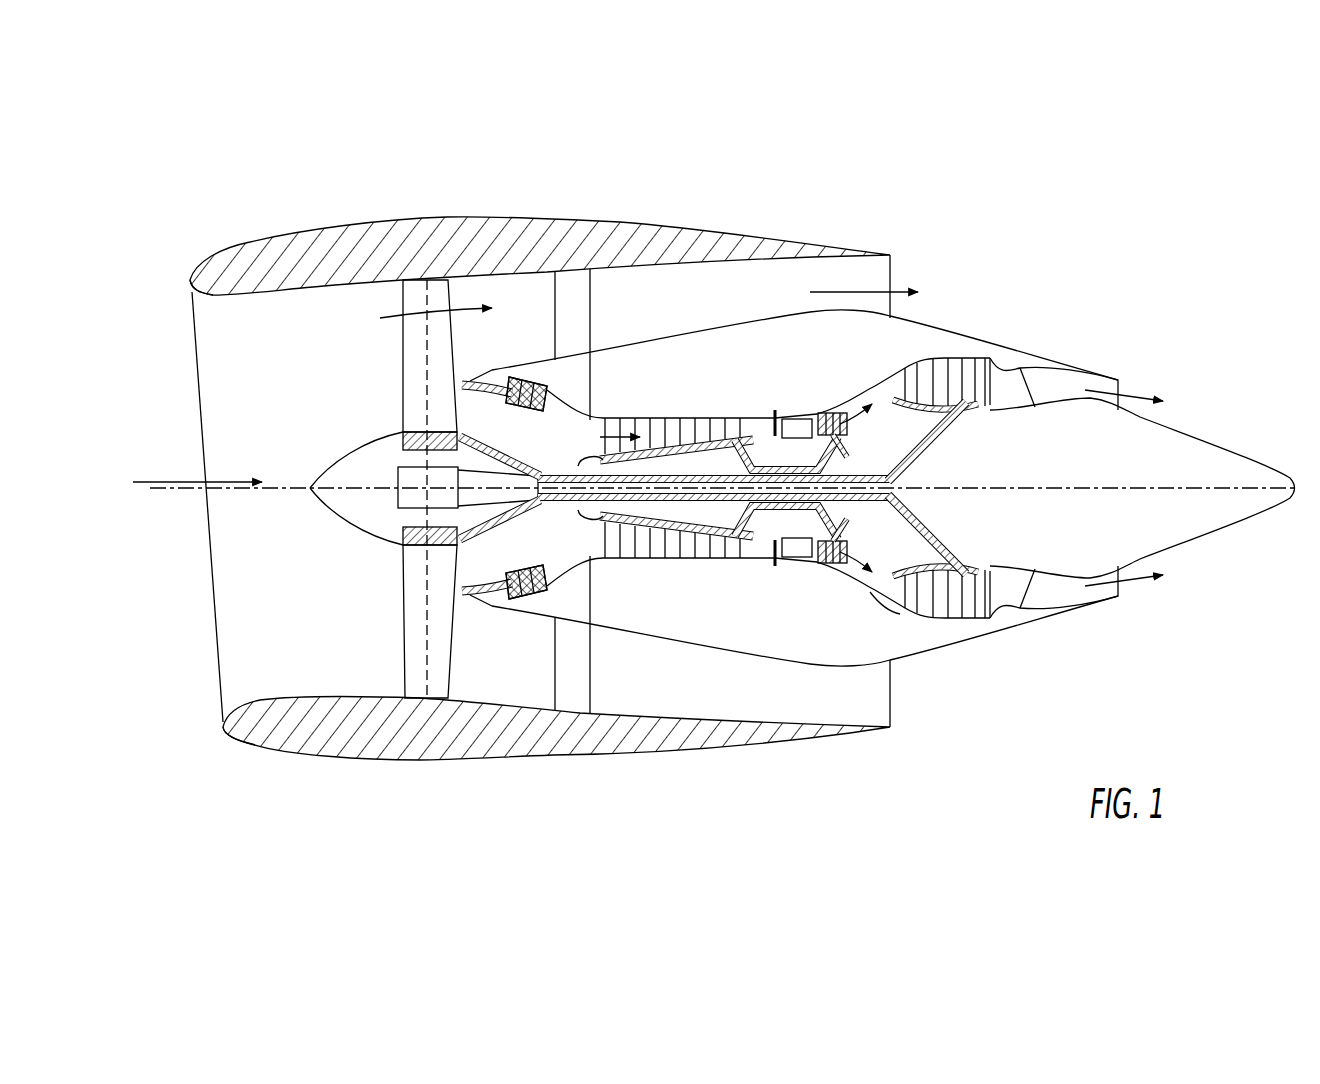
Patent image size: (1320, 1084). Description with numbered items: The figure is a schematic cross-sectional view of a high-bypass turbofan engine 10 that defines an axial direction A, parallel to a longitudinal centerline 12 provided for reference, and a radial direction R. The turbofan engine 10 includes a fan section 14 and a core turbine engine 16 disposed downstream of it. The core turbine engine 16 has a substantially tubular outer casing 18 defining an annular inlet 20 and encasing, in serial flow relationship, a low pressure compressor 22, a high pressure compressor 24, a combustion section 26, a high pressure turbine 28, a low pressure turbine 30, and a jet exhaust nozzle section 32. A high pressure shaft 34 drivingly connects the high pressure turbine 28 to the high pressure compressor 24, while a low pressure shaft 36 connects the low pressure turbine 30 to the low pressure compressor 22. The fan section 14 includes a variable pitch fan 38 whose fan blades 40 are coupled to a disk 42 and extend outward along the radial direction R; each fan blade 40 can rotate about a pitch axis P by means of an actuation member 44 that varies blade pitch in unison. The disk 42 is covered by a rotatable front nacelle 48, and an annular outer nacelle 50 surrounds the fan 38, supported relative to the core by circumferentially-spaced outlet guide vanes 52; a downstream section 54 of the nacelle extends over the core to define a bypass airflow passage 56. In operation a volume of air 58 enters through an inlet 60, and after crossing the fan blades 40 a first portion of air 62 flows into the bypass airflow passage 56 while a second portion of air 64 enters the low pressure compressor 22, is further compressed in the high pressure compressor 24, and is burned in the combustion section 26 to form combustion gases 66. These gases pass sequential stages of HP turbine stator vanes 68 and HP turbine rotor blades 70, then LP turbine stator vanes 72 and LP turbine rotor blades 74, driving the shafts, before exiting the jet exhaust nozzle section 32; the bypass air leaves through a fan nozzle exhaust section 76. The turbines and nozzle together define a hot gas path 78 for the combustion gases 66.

The turbofan engine 10 is at (714, 485).
The longitudinal centerline 12 is at (1058, 487).
The fan section 14 is at (358, 300).
The core turbine engine 16 is at (712, 378).
The outer casing 18 is at (747, 652).
The annular inlet 20 is at (493, 593).
The low pressure compressor 22 is at (550, 560).
The high pressure compressor 24 is at (637, 554).
The combustion section 26 is at (792, 560).
The high pressure turbine 28 is at (910, 553).
The low pressure turbine 30 is at (980, 623).
The jet exhaust nozzle section 32 is at (1121, 386).
The high pressure shaft 34 is at (805, 468).
The low pressure shaft 36 is at (556, 440).
The variable pitch fan 38 is at (376, 387).
The fan blades 40 is at (400, 640).
The disk 42 is at (423, 443).
The actuation member 44 is at (400, 480).
The front nacelle 48 is at (335, 505).
The outer nacelle 50 is at (445, 762).
The outlet guide vanes 52 is at (595, 298).
The downstream section 54 is at (840, 245).
The bypass airflow passage 56 is at (805, 472).
The volume of air 58 is at (195, 470).
The inlet 60 is at (222, 700).
The first portion of air 62 is at (410, 333).
The second portion of air 64 is at (490, 373).
The combustion gases 66 is at (1160, 378).
The HP turbine stator vanes 68 is at (808, 557).
The HP turbine rotor blades 70 is at (833, 528).
The LP turbine stator vanes 72 is at (900, 600).
The LP turbine rotor blades 74 is at (910, 610).
The fan nozzle exhaust section 76 is at (890, 278).
The hot gas path 78 is at (875, 392).
The pitch axis P is at (430, 297).
The radial direction R is at (113, 632).
The axial direction A is at (502, 845).